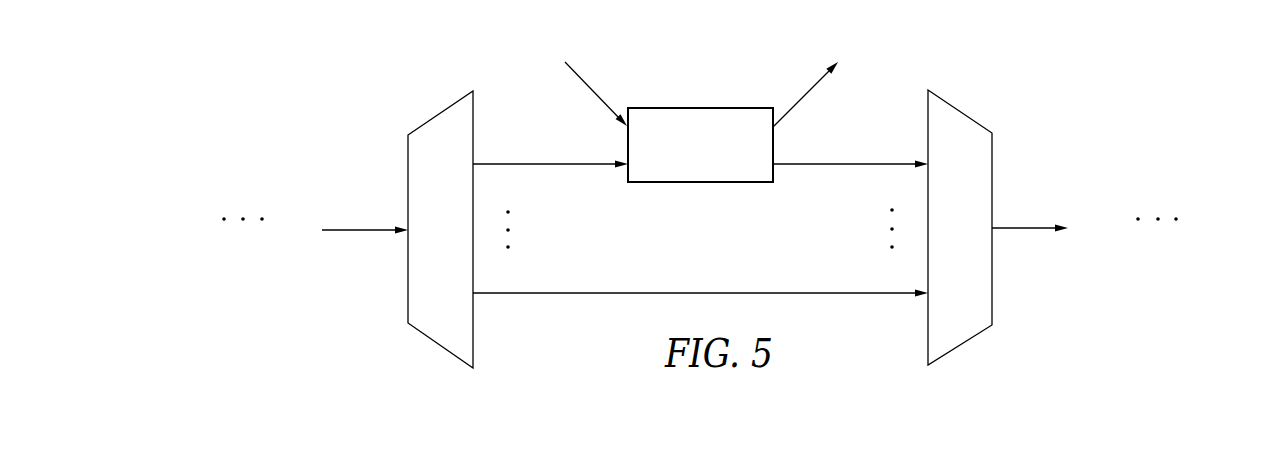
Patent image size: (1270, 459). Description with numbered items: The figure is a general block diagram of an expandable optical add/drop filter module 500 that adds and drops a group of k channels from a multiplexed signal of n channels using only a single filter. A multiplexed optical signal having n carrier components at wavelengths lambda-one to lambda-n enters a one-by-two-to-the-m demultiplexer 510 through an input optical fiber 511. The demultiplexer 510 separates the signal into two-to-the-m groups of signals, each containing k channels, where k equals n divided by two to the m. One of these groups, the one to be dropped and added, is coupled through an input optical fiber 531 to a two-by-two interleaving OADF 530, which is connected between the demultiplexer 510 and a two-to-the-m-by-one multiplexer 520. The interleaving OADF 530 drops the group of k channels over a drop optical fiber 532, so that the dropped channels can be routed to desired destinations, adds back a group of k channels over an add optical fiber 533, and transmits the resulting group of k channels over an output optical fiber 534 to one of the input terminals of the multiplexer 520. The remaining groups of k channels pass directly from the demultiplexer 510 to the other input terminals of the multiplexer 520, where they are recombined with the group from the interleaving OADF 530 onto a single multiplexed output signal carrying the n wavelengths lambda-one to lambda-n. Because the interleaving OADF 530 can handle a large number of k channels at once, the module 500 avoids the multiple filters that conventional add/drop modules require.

The expandable optical add/drop filter (OADF) module 500 is at (1030, 125).
The 1×2^m demultiplexer 510 is at (456, 240).
The input optical fiber 511 is at (350, 226).
The 2^m×1 multiplexer 520 is at (978, 238).
The 2×2 interleaving OADF (IOADF) 530 is at (717, 160).
The input optical fiber 531 is at (575, 168).
The drop optical fiber 532 is at (798, 100).
The add optical fiber 533 is at (604, 100).
The output optical fiber 534 is at (830, 168).